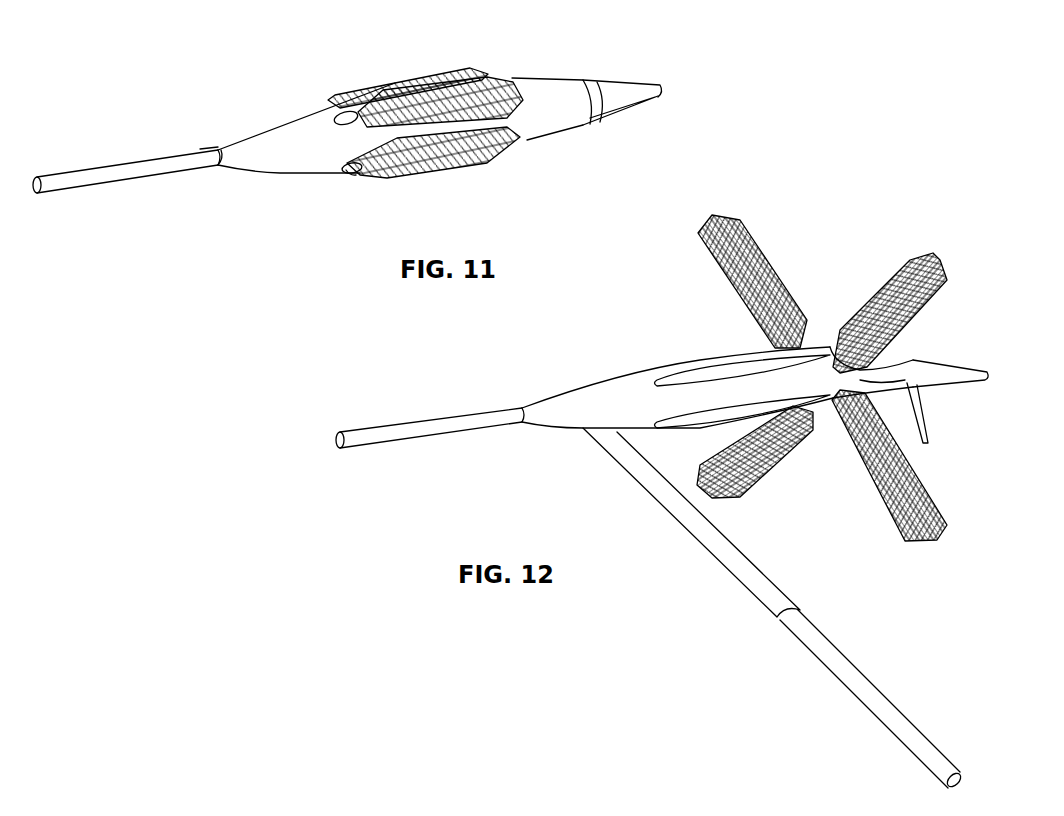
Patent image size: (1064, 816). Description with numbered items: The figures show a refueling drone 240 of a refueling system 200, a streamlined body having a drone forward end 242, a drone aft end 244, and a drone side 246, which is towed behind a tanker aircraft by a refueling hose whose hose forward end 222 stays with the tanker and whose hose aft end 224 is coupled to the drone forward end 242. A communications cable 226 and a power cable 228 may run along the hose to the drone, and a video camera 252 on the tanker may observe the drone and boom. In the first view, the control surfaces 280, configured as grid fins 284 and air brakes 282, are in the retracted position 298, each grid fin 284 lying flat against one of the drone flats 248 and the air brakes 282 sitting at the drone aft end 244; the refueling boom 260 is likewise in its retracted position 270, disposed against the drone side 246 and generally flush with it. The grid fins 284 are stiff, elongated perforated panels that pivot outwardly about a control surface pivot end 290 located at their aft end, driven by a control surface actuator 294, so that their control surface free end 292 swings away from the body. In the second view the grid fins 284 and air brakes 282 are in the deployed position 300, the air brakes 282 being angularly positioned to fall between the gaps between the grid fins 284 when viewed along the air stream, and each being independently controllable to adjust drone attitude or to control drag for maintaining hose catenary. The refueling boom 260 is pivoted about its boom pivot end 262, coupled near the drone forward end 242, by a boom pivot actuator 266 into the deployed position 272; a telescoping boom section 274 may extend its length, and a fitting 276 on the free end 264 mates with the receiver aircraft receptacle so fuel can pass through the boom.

In FIG. 11, the refueling system 200 is at (58, 172).
In FIG. 12, the refueling system 200 is at (360, 432).
In FIG. 11, the hose forward end 222 is at (68, 190).
In FIG. 12, the hose forward end 222 is at (366, 452).
In FIG. 11, the hose aft end 224 is at (200, 148).
In FIG. 12, the hose aft end 224 is at (511, 406).
In FIG. 11, the communications cable 226 is at (112, 185).
In FIG. 12, the communications cable 226 is at (405, 447).
In FIG. 11, the power cable 228 is at (98, 165).
In FIG. 12, the power cable 228 is at (400, 425).
In FIG. 11, the refueling drone 240 is at (285, 120).
In FIG. 12, the refueling drone 240 is at (597, 380).
In FIG. 11, the drone forward end 242 is at (219, 146).
In FIG. 12, the drone forward end 242 is at (531, 404).
In FIG. 11, the drone aft end 244 is at (660, 96).
In FIG. 12, the drone aft end 244 is at (950, 373).
In FIG. 11, the drone side 246 is at (317, 174).
In FIG. 12, the drone side 246 is at (636, 385).
In FIG. 11, the drone flats 248 is at (352, 180).
In FIG. 12, the drone flats 248 is at (702, 430).
In FIG. 11, the video camera 252 is at (222, 168).
In FIG. 12, the video camera 252 is at (528, 426).
In FIG. 11, the refueling boom 260 is at (280, 175).
In FIG. 12, the refueling boom 260 is at (668, 530).
In FIG. 12, the boom pivot end 262 is at (581, 430).
In FIG. 12, the free end 264 is at (945, 783).
In FIG. 12, the boom pivot actuator 266 is at (628, 441).
In FIG. 11, the retracted position 270 is at (280, 175).
In FIG. 12, the deployed position 272 is at (840, 690).
In FIG. 12, the boom section 274 is at (900, 712).
In FIG. 12, the fitting 276 is at (963, 778).
In FIG. 11, the control surfaces 280 is at (480, 76).
In FIG. 12, the control surfaces 280 is at (987, 375).
In FIG. 11, the air brakes 282 is at (628, 82).
In FIG. 12, the air brakes 282 is at (958, 386).
In FIG. 11, the grid fins 284 is at (393, 82).
In FIG. 12, the grid fins 284 is at (720, 272).
In FIG. 11, the control surface pivot end 290 is at (520, 96).
In FIG. 12, the control surface pivot end 290 is at (880, 356).
In FIG. 11, the control surface free end 292 is at (356, 170).
In FIG. 12, the control surface free end 292 is at (930, 442).
In FIG. 11, the control surface actuator 294 is at (600, 120).
In FIG. 12, the control surface actuator 294 is at (826, 360).
In FIG. 11, the retracted position 298 is at (640, 100).
In FIG. 12, the deployed position 300 is at (768, 465).